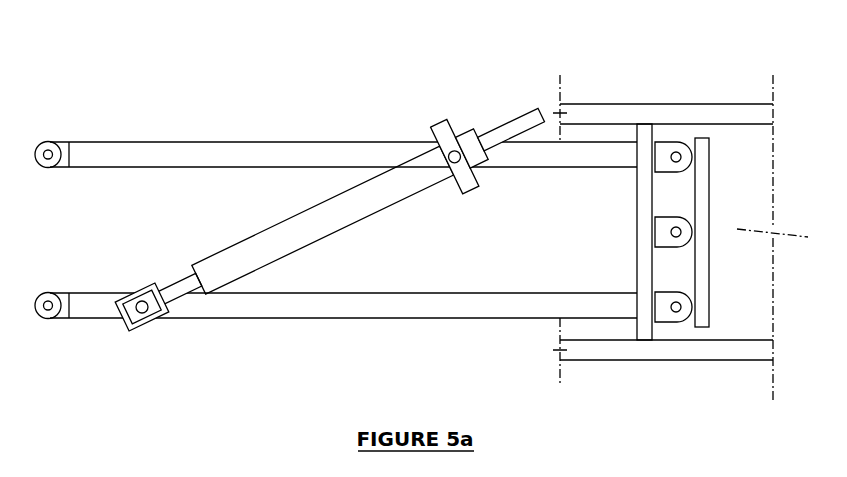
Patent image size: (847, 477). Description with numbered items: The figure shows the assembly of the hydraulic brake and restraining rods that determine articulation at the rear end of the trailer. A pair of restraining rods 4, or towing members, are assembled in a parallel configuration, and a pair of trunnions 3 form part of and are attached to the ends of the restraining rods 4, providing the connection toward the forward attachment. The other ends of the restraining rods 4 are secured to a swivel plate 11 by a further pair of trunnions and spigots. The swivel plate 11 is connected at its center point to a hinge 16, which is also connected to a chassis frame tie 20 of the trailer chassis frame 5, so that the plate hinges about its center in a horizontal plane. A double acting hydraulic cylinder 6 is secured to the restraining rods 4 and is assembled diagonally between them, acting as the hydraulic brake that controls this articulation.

The trunnion 3 is at (50, 142).
The restraining rod 4 is at (243, 142).
The trailer chassis frame 5 is at (666, 103).
The double acting hydraulic cylinder 6 is at (330, 235).
The swivel plate 11 is at (709, 196).
The hinge 16 is at (676, 232).
The chassis frame tie 20 is at (641, 270).